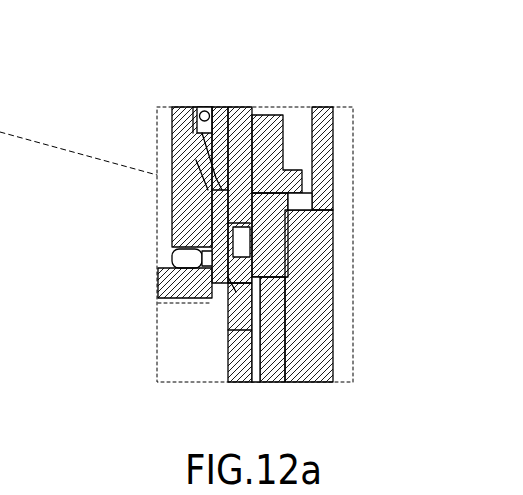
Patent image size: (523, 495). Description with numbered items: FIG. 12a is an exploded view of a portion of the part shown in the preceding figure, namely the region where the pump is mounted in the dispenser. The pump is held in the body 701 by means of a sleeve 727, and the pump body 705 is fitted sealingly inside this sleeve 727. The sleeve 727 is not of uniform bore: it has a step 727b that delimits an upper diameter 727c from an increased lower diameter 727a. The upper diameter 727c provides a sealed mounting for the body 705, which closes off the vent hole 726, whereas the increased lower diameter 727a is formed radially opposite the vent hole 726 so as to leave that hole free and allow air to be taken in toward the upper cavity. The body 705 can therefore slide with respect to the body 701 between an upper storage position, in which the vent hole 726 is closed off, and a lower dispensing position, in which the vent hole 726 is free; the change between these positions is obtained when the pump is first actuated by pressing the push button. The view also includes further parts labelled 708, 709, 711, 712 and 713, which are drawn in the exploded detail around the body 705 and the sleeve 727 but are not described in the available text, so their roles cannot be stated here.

The body 701 is at (333, 270).
The body 705 is at (242, 382).
The ball 708 is at (183, 107).
The outer sleeve 709 is at (175, 235).
The pin 711 is at (175, 262).
The inner sleeve 712 is at (210, 107).
The piston rod 713 is at (230, 110).
The vent hole 726 is at (243, 233).
The sleeve 727 is at (270, 122).
The increased diameter 727a is at (240, 330).
The step 727b is at (262, 277).
The upper diameter 727c is at (248, 183).